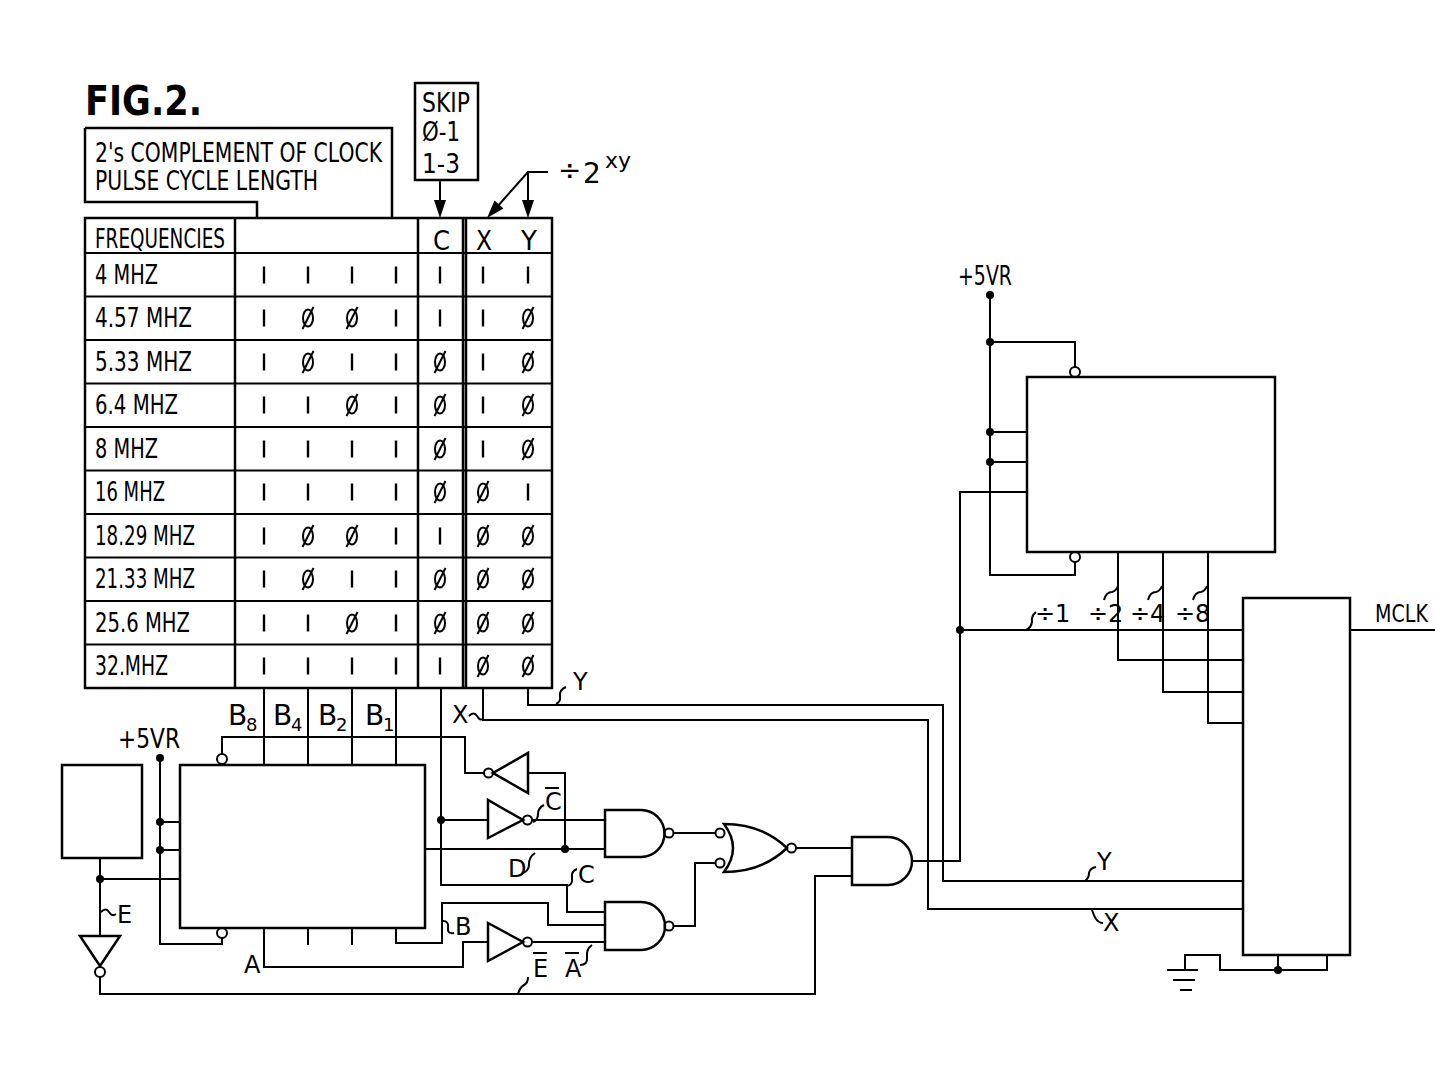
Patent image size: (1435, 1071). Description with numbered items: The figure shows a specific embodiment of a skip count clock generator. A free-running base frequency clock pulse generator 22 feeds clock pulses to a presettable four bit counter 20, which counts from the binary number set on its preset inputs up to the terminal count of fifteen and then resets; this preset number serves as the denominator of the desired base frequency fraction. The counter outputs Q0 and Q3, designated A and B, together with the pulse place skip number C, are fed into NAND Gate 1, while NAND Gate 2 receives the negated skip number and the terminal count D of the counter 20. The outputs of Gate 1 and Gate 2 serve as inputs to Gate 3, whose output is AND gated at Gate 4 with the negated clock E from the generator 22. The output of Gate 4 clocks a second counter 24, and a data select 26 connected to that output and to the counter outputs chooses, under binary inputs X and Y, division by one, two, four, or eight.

The presettable four bit counter 20 is at (320, 861).
The base frequency clock pulse generator 22 is at (85, 765).
The second counter 24 is at (1205, 480).
The data select 26 is at (1332, 830).
The NAND Gate 1 is at (640, 941).
The NAND Gate 2 is at (640, 848).
The Gate 3 is at (756, 862).
The AND Gate 4 is at (884, 875).